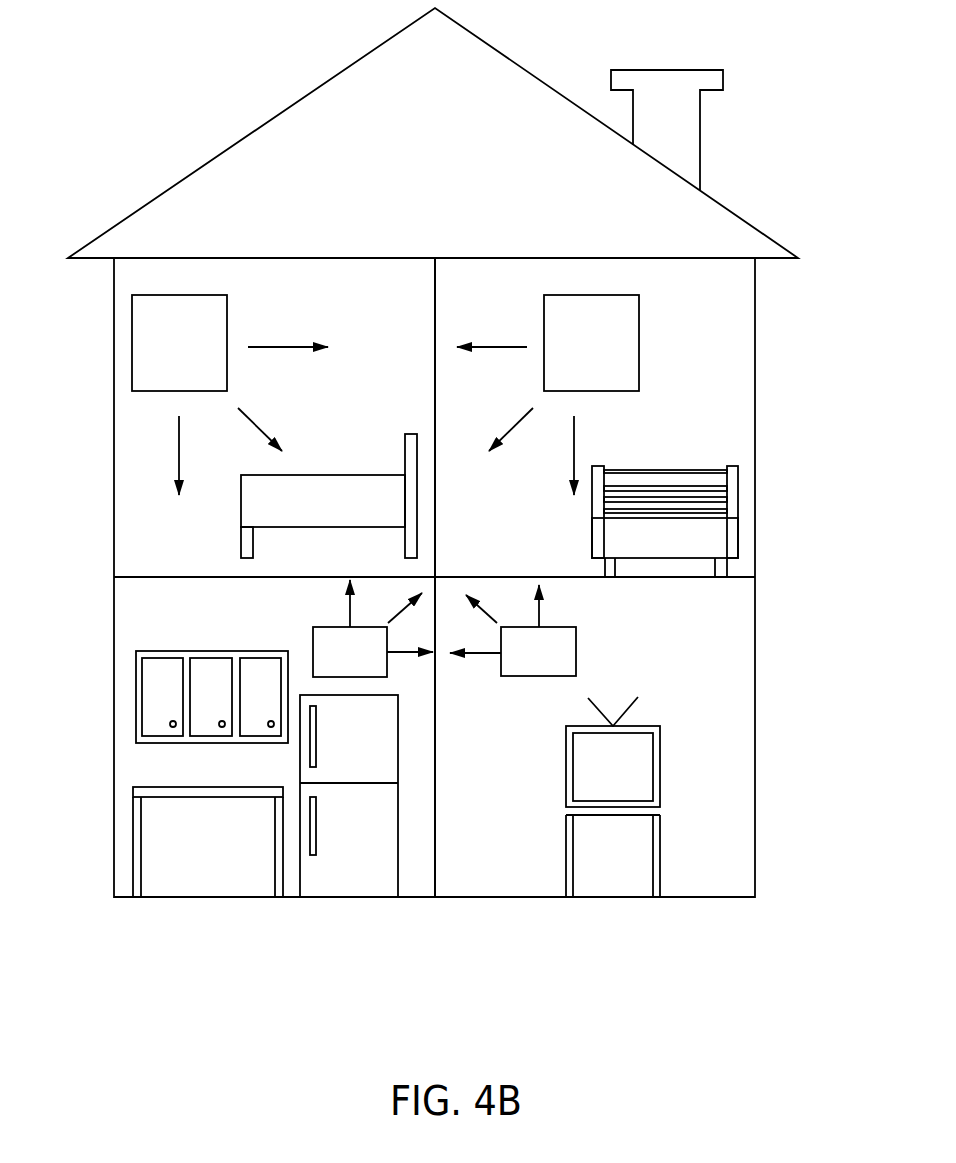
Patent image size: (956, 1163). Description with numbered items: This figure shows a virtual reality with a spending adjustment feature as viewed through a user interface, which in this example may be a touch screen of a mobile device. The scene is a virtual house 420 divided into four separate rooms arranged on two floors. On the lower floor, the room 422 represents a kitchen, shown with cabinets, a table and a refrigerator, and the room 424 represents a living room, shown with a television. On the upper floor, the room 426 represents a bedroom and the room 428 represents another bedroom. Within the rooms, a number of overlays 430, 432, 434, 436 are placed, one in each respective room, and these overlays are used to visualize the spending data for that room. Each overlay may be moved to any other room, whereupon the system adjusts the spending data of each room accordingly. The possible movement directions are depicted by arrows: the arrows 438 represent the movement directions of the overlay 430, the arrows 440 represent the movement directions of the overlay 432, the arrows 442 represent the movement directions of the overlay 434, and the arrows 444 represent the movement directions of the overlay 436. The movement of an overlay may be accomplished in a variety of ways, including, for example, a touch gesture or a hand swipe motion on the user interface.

The virtual house 420 is at (187, 112).
The room 422 is at (147, 607).
The room 424 is at (722, 677).
The room 426 is at (145, 438).
The room 428 is at (720, 377).
The overlay 430 is at (375, 663).
The overlay 432 is at (513, 663).
The overlay 434 is at (153, 356).
The overlay 436 is at (566, 356).
The arrows 438 is at (402, 655).
The arrows 440 is at (486, 655).
The arrows 442 is at (277, 347).
The arrows 444 is at (512, 347).